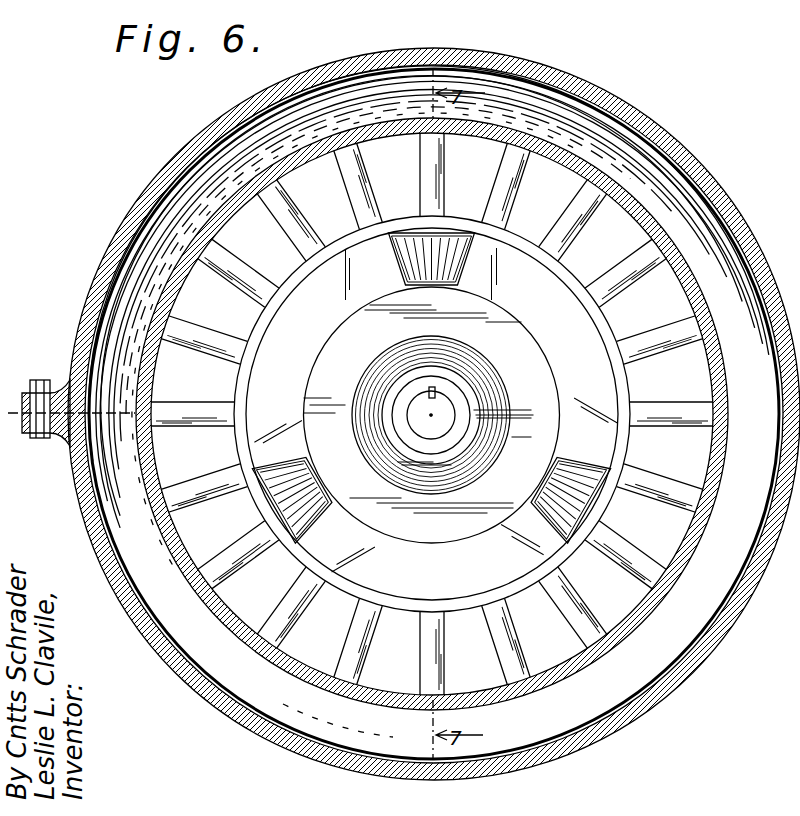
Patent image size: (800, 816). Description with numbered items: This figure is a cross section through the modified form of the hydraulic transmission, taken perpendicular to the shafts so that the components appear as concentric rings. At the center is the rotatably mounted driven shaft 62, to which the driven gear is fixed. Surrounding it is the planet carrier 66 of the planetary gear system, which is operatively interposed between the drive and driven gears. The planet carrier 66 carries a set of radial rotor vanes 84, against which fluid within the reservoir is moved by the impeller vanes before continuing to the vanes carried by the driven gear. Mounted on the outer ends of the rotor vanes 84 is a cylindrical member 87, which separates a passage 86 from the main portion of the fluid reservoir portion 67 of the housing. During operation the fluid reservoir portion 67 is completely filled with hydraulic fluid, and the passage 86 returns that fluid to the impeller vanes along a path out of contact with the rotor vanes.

The passage 86 is at (434, 413).
The cylindrical member 87 is at (433, 414).
The rotor vanes 84 is at (467, 414).
The fluid reservoir portion 67 is at (429, 401).
The planet carrier 66 is at (436, 406).
The driven shaft 62 is at (445, 415).